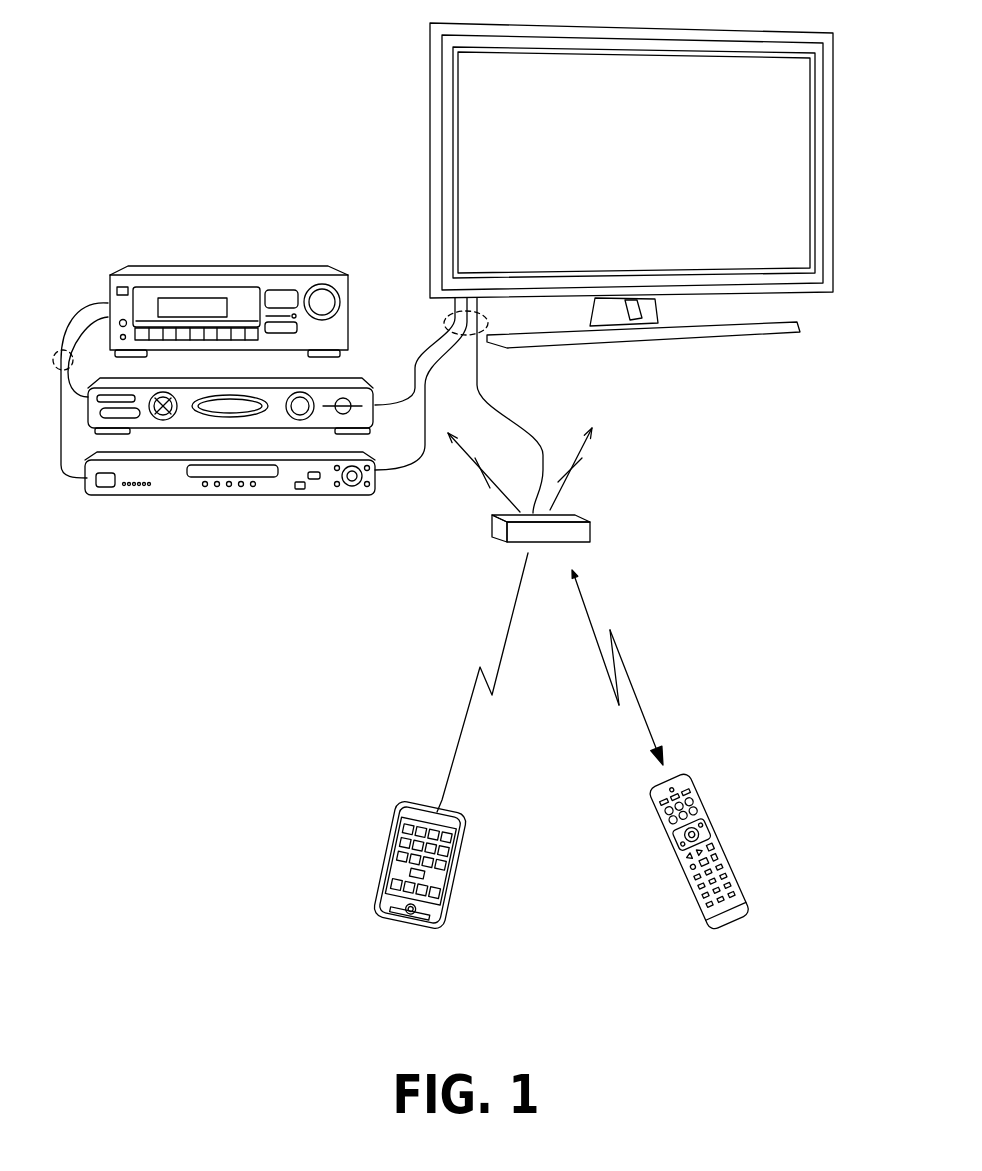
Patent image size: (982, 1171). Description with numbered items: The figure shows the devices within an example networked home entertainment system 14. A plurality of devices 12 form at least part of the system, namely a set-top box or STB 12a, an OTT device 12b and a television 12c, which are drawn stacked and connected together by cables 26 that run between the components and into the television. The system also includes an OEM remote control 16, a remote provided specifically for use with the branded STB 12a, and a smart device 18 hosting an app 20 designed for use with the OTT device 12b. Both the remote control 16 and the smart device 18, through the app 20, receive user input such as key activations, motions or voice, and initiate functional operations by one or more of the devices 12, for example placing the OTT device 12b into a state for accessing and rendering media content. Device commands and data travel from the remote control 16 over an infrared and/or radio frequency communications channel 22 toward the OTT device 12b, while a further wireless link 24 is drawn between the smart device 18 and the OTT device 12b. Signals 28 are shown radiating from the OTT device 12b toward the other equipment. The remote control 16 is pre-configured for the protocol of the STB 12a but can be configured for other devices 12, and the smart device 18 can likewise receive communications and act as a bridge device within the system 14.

The home entertainment system 14 is at (309, 101).
The devices 12 is at (178, 264).
The STB 12a is at (333, 380).
The OTT device 12b is at (590, 530).
The television 12c is at (802, 294).
The OEM remote control 16 is at (730, 930).
The smart device 18 is at (380, 881).
The app 20 is at (425, 857).
The communications channel 22 is at (628, 675).
The wireless communication link 24 is at (505, 642).
The cables 26 is at (440, 322).
The infrared signals 28 is at (478, 478).